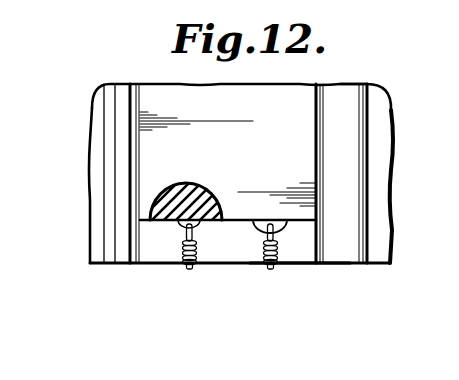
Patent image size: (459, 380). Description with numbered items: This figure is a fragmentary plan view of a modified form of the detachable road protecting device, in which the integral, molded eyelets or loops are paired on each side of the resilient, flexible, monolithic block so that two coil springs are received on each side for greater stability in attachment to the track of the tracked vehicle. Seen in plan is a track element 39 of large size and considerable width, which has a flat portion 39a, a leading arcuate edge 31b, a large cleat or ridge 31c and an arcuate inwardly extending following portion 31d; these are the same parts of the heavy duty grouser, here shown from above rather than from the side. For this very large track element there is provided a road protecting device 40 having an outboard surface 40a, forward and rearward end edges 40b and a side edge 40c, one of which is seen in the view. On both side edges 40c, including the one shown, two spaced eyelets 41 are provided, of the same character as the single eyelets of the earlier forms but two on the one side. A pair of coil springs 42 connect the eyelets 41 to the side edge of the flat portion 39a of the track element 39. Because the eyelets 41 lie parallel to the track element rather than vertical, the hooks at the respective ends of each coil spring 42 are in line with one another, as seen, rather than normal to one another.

The leading arcuate edge 31b is at (352, 257).
The large cleat or ridge 31c is at (122, 262).
The arcuate inwardly extending following portion 31d is at (92, 250).
The track element 39 is at (212, 272).
The flat portion 39a is at (297, 259).
The road protecting device 40 is at (162, 104).
The outboard surface 40a is at (306, 88).
The forward and rearward end edges 40b is at (142, 192).
The side edge 40c is at (236, 222).
The eyelets 41 is at (177, 233).
The coil springs 42 is at (180, 253).